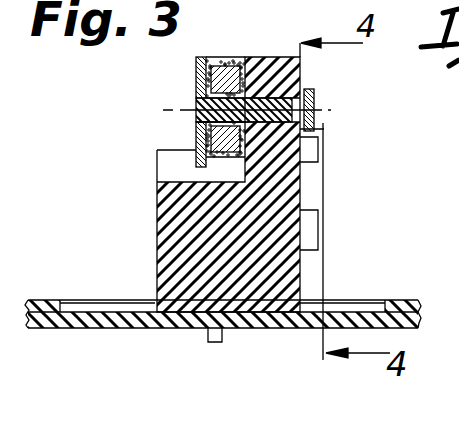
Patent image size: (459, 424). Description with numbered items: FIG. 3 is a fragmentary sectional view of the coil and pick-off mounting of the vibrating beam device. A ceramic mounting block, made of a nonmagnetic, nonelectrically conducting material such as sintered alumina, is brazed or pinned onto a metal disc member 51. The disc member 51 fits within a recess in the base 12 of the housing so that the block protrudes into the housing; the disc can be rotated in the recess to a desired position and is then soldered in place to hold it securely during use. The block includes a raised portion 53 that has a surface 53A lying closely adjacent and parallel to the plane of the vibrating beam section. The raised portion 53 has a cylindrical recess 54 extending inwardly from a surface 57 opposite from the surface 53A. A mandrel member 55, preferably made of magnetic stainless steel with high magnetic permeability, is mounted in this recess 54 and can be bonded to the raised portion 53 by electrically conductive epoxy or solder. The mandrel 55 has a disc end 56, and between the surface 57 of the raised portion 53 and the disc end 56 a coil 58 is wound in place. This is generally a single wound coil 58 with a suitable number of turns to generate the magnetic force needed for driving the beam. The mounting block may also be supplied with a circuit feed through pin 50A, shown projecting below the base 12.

The base 12 is at (398, 300).
The disc member 51 is at (133, 329).
The raised portion 53 is at (281, 55).
The surface 53A is at (305, 73).
The cylindrical recess 54 is at (304, 136).
The disc end 56 is at (196, 70).
The coil 58 is at (223, 62).
The surface 57 is at (237, 57).
The mandrel member 55 is at (213, 116).
The circuit feed through pin 50A is at (222, 338).